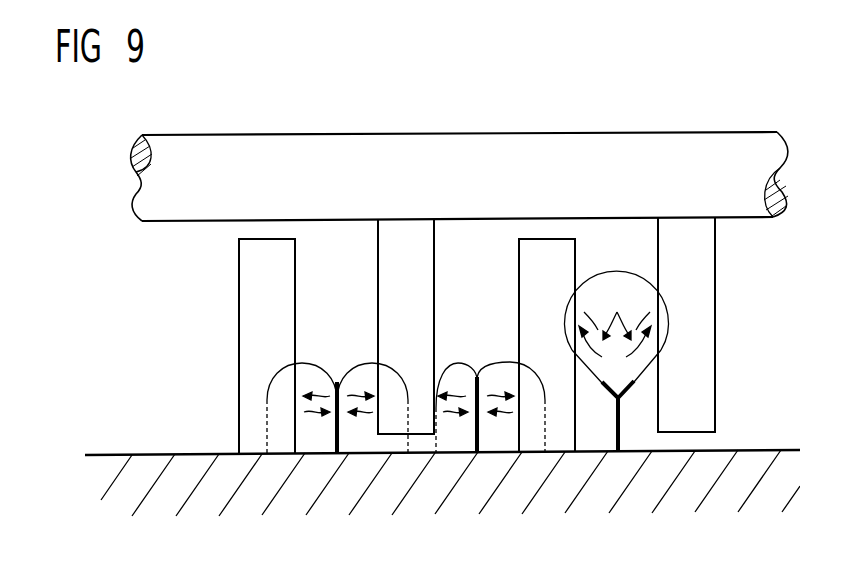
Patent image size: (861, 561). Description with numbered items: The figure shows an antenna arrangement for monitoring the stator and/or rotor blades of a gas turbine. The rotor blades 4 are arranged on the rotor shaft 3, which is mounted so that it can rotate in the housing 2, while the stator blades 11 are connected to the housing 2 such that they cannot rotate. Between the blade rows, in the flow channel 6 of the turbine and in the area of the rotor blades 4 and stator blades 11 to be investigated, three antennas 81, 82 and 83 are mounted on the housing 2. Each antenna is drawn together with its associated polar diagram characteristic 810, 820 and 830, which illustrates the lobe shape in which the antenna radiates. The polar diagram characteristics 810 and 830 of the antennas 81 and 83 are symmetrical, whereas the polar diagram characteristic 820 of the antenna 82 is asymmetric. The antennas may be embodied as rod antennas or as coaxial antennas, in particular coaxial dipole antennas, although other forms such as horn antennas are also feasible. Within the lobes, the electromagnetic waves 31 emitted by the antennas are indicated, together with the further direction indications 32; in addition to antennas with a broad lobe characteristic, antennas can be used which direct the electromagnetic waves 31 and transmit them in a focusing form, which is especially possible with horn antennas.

The housing 2 is at (140, 477).
The rotor shaft 3 is at (456, 150).
The rotor blades 4 is at (400, 259).
The flow channel 6 is at (128, 343).
The stator blades 11 is at (254, 273).
The electromagnetic waves 31 is at (455, 393).
The flow direction 32 is at (362, 415).
The antenna 81 is at (336, 431).
The antenna 82 is at (479, 432).
The antenna 83 is at (621, 424).
The polar diagram characteristic 810 is at (330, 360).
The polar diagram characteristic 820 is at (460, 366).
The polar diagram characteristic 830 is at (615, 263).